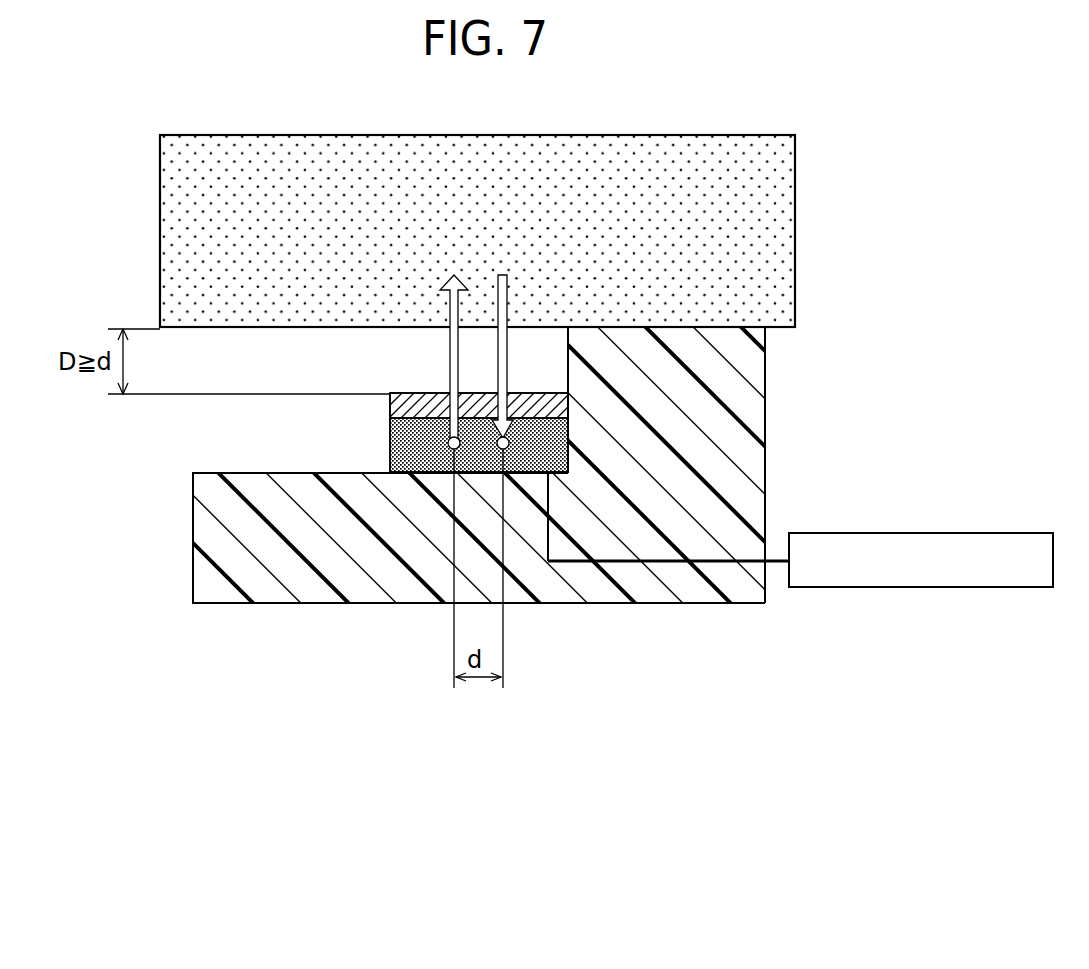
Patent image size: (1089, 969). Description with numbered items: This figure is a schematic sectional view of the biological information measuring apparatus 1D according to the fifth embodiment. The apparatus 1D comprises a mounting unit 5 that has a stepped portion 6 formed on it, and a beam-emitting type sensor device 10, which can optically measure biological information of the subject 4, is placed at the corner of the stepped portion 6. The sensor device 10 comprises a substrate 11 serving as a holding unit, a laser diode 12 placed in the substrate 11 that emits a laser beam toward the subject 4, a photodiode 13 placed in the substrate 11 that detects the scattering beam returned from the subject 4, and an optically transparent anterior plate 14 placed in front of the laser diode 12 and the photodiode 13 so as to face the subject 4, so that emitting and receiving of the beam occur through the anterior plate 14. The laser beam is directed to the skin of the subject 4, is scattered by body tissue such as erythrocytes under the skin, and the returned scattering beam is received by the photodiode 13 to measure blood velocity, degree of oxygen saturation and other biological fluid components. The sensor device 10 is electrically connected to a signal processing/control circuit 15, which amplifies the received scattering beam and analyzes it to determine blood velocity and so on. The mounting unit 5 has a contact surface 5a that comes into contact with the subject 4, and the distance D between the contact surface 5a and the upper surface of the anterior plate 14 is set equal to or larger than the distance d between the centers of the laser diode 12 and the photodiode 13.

The subject 4 is at (783, 224).
The contact surface 5a is at (725, 327).
The mounting unit 5 is at (753, 418).
The stepped portion 6 is at (263, 473).
The beam-emitting type sensor device 10 is at (385, 463).
The substrate 11 is at (388, 448).
The anterior plate 14 is at (388, 413).
The laser diode 12 is at (452, 450).
The photodiode 13 is at (506, 450).
The signal processing/control circuit 15 is at (890, 533).
The biological information measuring apparatus 1D is at (631, 624).